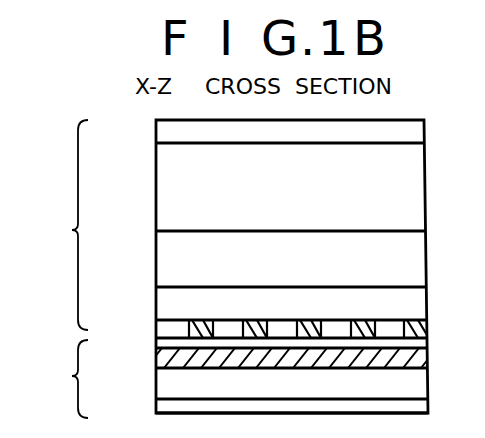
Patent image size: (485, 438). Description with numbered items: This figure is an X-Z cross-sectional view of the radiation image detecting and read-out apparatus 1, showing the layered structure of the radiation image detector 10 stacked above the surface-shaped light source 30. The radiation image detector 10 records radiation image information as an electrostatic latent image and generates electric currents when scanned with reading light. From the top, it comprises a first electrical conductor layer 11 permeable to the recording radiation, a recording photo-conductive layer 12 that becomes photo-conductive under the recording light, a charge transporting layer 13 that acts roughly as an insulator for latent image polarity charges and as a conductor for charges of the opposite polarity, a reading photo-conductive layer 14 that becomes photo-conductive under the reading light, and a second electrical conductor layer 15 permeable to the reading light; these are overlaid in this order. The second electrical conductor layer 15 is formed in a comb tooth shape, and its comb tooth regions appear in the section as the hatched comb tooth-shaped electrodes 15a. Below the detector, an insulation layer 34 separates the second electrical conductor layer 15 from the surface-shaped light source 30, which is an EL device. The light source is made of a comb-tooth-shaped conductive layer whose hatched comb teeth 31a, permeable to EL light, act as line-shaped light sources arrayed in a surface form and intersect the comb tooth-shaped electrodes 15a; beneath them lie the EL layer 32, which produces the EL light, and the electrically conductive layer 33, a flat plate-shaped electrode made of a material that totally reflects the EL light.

The radiation image detecting and read-out apparatus 1 is at (428, 106).
The radiation image detector 10 is at (64, 225).
The first electrical conductor layer 11 is at (158, 135).
The recording photo-conductive layer 12 is at (158, 190).
The charge transporting layer 13 is at (158, 258).
The reading photo-conductive layer 14 is at (158, 302).
The second electrical conductor layer 15 is at (282, 320).
The comb tooth-shaped electrodes 15a is at (428, 322).
The surface-shaped light source 30 is at (65, 379).
The insulation layer 34 is at (158, 348).
The comb teeth 31a is at (158, 359).
The EL layer 32 is at (158, 384).
The electrically conductive layer 33 is at (158, 403).